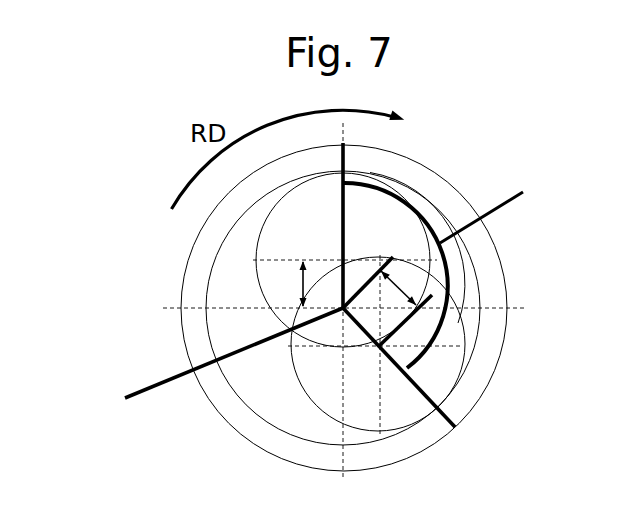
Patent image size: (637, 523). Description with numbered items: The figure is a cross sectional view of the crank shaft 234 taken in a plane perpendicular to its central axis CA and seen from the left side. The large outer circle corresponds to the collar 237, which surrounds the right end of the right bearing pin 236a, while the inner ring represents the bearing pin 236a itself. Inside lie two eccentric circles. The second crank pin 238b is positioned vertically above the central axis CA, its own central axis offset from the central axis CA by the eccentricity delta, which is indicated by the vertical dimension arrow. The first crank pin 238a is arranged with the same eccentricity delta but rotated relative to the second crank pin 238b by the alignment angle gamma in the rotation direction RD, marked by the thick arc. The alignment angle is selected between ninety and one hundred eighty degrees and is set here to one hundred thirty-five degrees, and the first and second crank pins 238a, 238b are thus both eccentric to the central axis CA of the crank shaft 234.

The crank shaft 234 is at (72, 204).
The bearing pin 236a is at (263, 388).
The collar 237 is at (423, 438).
The first crank pin 238a is at (325, 387).
The second crank pin 238b is at (283, 227).